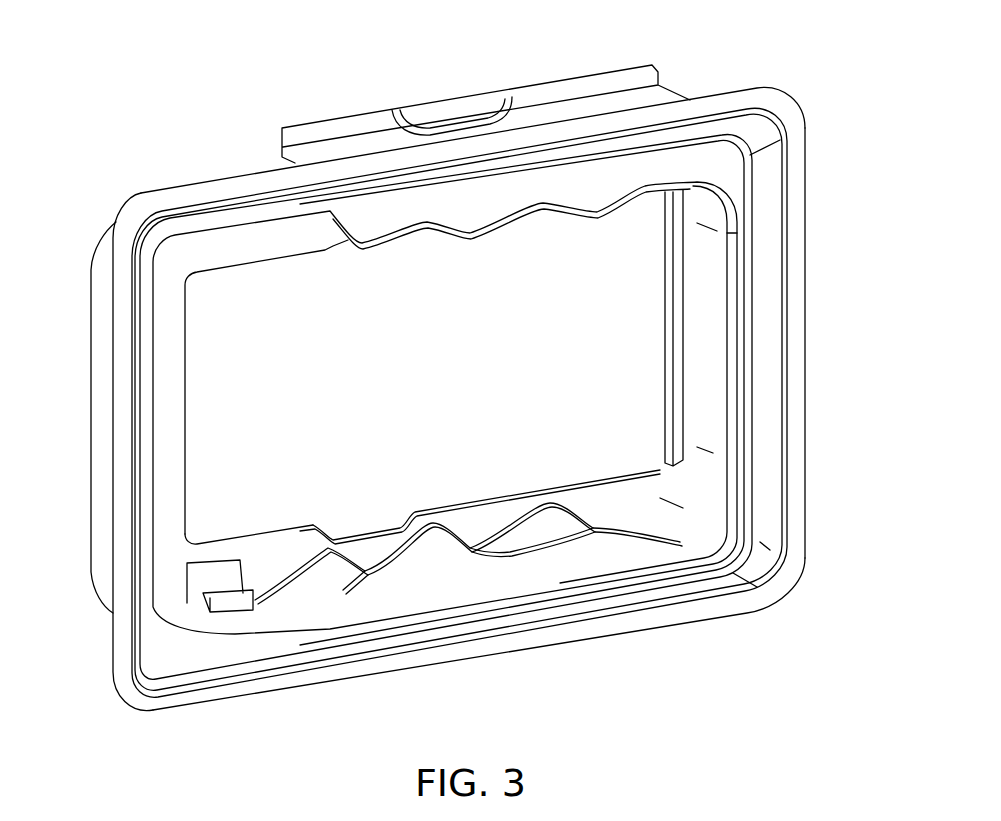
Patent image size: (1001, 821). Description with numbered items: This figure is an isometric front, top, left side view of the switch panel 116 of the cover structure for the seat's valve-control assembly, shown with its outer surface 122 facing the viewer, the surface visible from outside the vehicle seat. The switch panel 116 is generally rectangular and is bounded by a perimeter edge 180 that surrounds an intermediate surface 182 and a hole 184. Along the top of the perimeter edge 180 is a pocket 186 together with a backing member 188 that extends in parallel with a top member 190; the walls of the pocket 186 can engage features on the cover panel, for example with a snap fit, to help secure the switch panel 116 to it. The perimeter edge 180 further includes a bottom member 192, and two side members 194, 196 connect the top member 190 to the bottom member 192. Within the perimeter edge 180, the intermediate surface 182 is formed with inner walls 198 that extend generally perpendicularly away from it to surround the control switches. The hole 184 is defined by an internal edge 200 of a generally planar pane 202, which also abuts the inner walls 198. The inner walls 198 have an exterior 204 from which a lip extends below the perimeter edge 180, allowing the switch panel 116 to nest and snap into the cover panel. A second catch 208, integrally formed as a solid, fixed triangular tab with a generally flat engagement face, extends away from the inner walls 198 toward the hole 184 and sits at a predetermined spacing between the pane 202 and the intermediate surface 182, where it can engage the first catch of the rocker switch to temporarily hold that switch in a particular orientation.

The switch panel 116 is at (127, 136).
The outer surface 122 is at (480, 650).
The perimeter edge 180 is at (795, 128).
The intermediate surface 182 is at (732, 188).
The hole 184 is at (612, 350).
The pocket 186 is at (470, 108).
The backing member 188 is at (625, 78).
The top member 190 is at (750, 103).
The bottom member 192 is at (738, 607).
The side member 194 is at (797, 487).
The side member 196 is at (120, 650).
The inner walls 198 is at (714, 422).
The internal edge 200 is at (665, 440).
The pane 202 is at (612, 493).
The exterior 204 is at (110, 570).
The second catch 208 is at (240, 603).